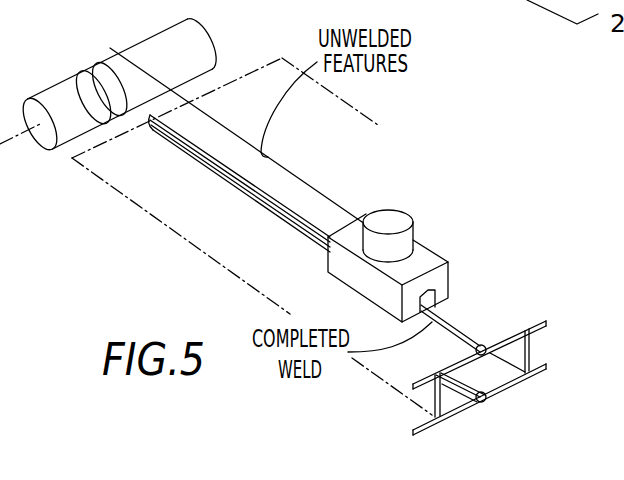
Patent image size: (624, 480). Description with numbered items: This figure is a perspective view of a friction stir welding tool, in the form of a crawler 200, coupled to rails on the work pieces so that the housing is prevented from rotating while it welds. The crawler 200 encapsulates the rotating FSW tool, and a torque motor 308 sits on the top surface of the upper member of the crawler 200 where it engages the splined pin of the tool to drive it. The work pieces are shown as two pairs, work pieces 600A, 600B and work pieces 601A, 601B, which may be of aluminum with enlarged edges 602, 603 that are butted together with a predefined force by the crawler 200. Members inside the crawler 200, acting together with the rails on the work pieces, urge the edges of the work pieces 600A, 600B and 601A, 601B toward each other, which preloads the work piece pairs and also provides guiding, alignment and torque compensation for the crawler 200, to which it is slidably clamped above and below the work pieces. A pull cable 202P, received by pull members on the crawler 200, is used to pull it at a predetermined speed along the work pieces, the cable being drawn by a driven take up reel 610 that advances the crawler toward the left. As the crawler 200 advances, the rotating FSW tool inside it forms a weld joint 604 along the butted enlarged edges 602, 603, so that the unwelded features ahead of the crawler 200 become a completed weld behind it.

The driven take up reel 610 is at (142, 52).
The work piece 600A is at (281, 57).
The work piece 600B is at (166, 218).
The pull cable 202P is at (287, 171).
The enlarged edge 602 is at (304, 221).
The enlarged edge 603 is at (297, 226).
The torque motor 308 is at (400, 210).
The crawler 200 is at (431, 255).
The weld joint 604 is at (452, 321).
The work piece 601A is at (492, 380).
The work piece 601B is at (445, 418).